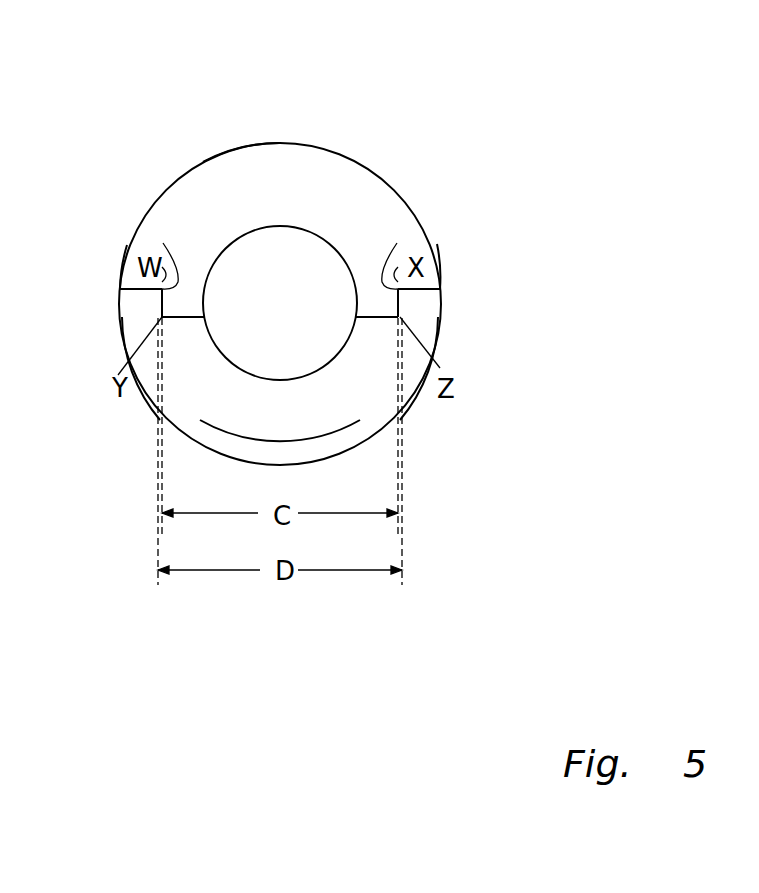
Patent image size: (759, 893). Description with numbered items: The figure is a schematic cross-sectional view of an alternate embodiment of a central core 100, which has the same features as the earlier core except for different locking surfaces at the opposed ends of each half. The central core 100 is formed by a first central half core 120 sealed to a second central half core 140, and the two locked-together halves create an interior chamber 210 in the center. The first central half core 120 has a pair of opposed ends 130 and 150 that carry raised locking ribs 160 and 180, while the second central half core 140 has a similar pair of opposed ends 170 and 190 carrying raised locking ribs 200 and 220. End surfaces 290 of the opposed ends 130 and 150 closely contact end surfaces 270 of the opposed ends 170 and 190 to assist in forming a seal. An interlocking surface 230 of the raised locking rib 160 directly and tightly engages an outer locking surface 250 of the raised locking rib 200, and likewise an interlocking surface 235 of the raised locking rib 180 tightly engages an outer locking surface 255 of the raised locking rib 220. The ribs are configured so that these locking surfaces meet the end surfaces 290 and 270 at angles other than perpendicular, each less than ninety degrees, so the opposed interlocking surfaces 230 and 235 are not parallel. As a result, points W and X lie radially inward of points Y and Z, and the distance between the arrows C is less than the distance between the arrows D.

The central core 100 is at (313, 132).
The first central half core 120 is at (203, 162).
The opposed end 130 is at (127, 245).
The second central half core 140 is at (285, 467).
The opposed end 150 is at (437, 244).
The raised locking rib 160 is at (183, 313).
The opposed end 170 is at (140, 393).
The raised locking rib 180 is at (376, 313).
The opposed end 190 is at (418, 392).
The raised locking rib 200 is at (145, 293).
The interior chamber 210 is at (305, 319).
The raised locking rib 220 is at (417, 296).
The interlocking surface 230 is at (163, 243).
The interlocking surface 235 is at (397, 243).
The outer locking surface 250 is at (158, 305).
The outer locking surface 255 is at (402, 305).
The end surface 270 is at (122, 292).
The end surface 290 is at (137, 286).